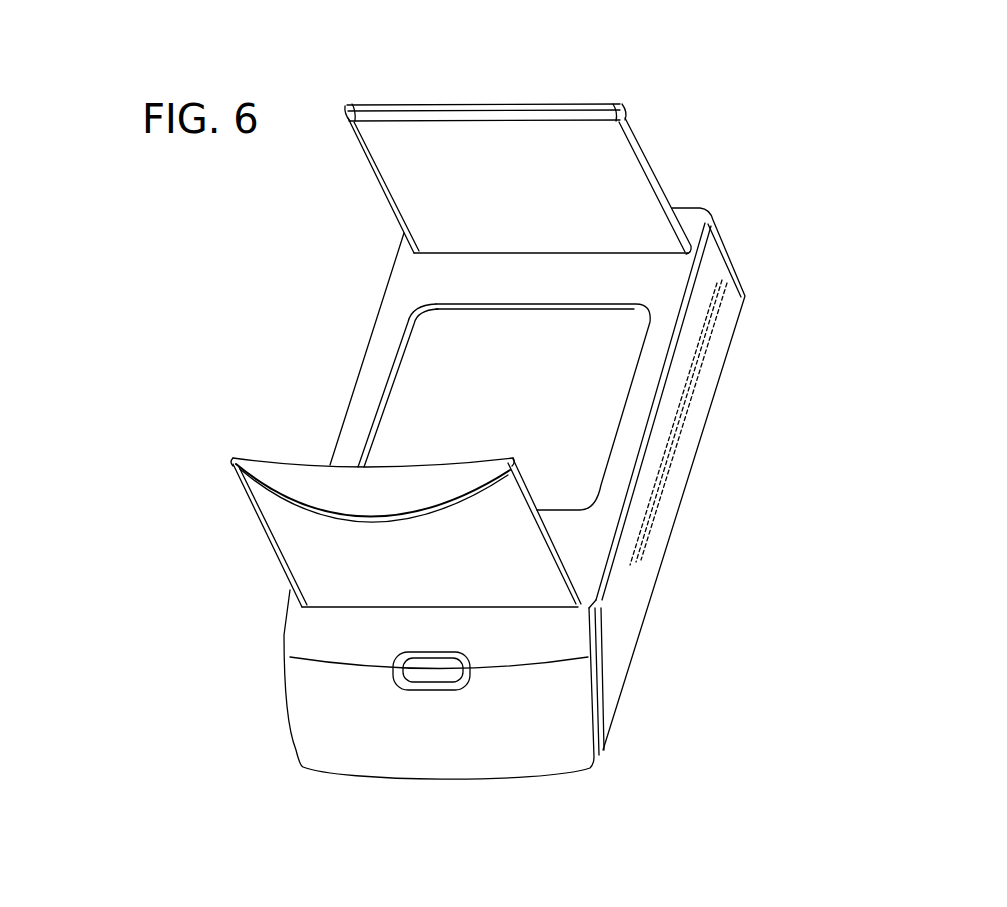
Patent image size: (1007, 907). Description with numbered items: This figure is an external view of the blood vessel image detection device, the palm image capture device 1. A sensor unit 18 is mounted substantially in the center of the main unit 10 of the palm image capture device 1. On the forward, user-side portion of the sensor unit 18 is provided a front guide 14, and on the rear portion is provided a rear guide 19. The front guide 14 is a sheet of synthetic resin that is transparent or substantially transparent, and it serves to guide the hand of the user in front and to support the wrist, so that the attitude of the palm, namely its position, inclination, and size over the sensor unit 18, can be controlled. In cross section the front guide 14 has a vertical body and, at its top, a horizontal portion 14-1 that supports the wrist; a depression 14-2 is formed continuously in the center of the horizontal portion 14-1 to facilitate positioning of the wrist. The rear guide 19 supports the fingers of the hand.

The palm image capture device 1 is at (728, 335).
The main unit 10 is at (615, 667).
The front guide 14 is at (311, 548).
The horizontal portion 14-1 is at (273, 463).
The depression 14-2 is at (320, 485).
The sensor unit 18 is at (605, 398).
The rear guide 19 is at (495, 115).